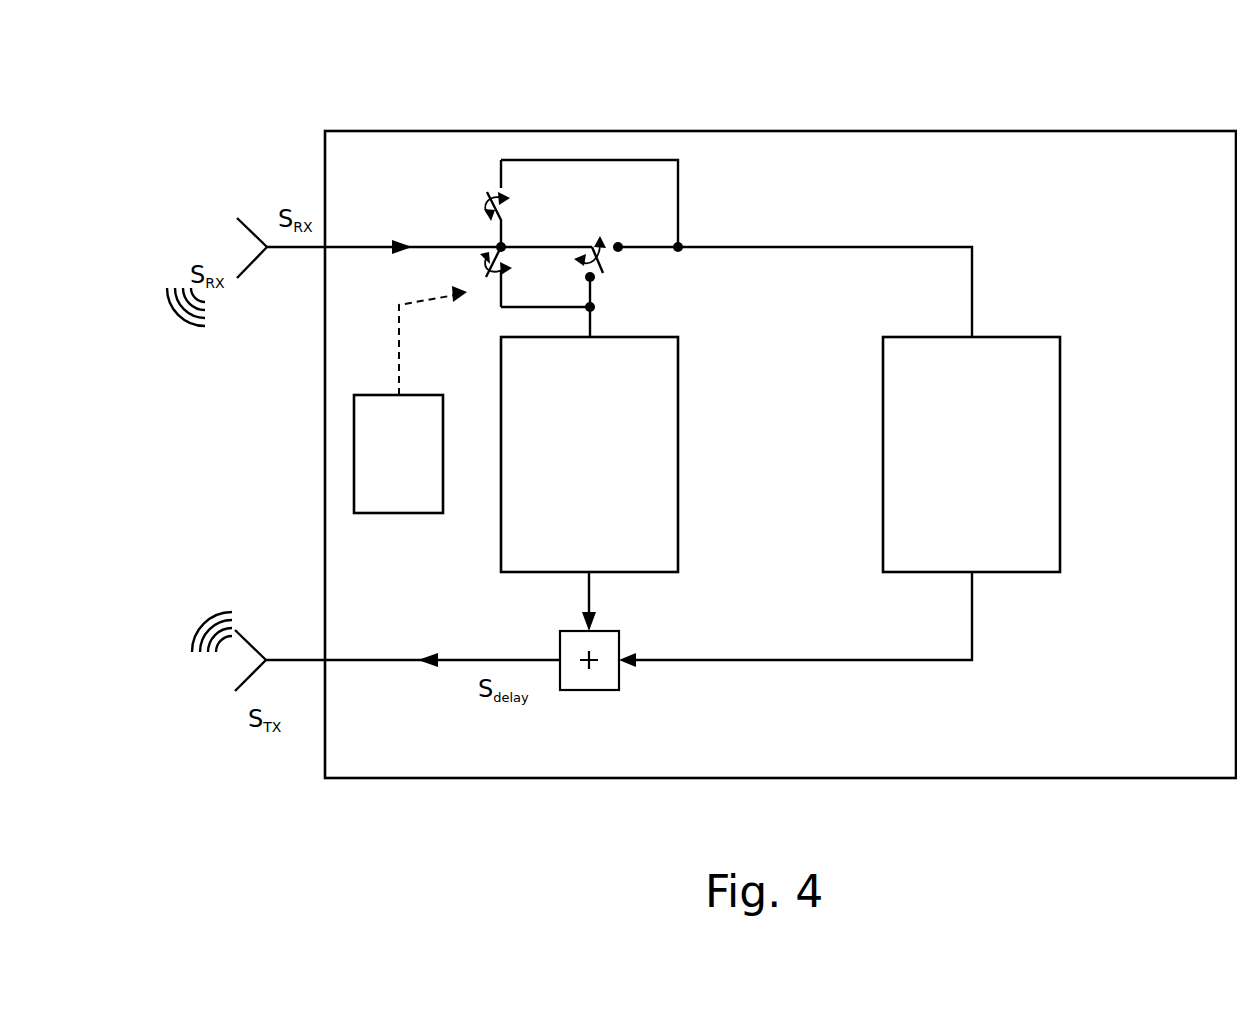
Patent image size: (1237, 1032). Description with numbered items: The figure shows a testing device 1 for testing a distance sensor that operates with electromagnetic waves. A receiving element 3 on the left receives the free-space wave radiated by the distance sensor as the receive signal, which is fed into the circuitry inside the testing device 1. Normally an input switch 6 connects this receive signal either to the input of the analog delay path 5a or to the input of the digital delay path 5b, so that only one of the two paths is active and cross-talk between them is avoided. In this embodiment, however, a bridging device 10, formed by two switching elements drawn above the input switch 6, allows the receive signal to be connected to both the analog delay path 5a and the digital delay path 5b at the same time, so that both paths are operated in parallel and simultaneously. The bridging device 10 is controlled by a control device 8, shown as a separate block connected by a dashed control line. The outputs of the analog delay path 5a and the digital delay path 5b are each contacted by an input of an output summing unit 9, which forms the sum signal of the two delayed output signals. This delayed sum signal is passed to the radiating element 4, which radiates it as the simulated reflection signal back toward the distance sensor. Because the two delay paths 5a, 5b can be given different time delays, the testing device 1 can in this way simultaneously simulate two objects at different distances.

The testing device 1 is at (260, 122).
The receiving element 3 is at (253, 230).
The radiating element 4 is at (252, 643).
The analog delay path 5a is at (589, 454).
The digital delay path 5b is at (971, 454).
The input switch 6 is at (603, 273).
The control device 8 is at (410, 399).
The output summing unit 9 is at (589, 690).
The bridging device 10 is at (462, 214).